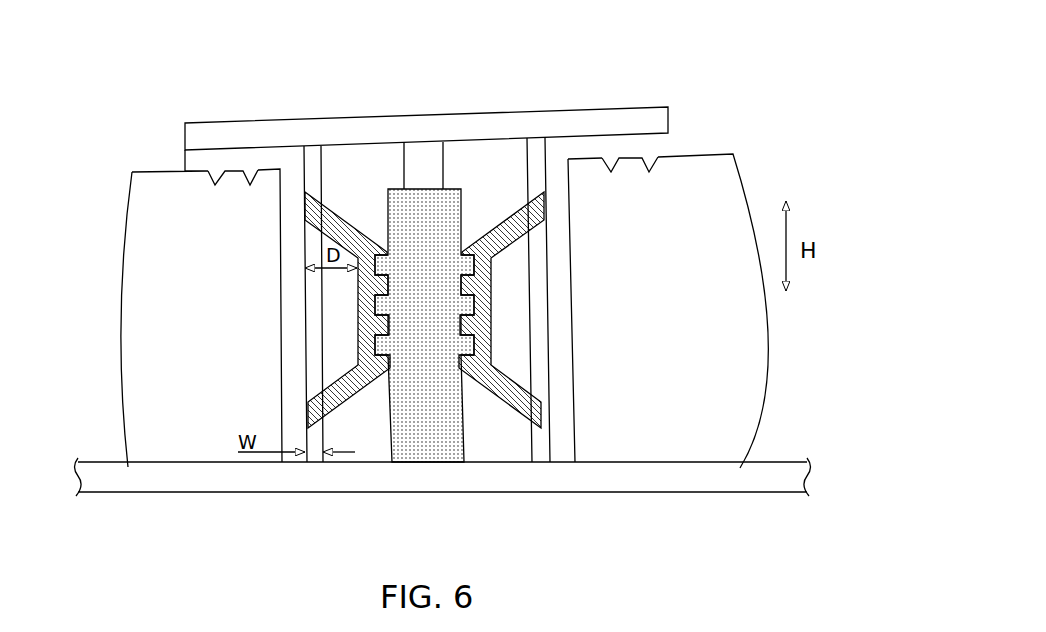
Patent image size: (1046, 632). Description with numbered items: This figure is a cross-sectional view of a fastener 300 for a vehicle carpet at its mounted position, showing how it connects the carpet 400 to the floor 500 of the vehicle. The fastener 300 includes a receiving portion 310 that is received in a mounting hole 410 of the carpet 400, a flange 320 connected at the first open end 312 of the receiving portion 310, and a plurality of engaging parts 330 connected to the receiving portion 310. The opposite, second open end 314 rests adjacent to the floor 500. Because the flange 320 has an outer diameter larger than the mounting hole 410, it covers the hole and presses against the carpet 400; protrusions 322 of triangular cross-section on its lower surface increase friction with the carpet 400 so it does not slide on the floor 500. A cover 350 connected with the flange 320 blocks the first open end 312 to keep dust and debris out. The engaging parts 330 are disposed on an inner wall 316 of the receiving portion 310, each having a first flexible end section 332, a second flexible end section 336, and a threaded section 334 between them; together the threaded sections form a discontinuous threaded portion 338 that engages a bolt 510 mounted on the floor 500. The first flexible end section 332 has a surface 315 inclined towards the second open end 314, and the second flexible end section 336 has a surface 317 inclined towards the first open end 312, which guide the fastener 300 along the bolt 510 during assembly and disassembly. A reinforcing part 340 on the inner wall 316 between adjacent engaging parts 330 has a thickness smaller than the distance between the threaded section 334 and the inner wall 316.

The fastener 300 is at (660, 60).
The receiving portion 310 is at (278, 291).
The first open end 312 is at (462, 140).
The second open end 314 is at (298, 465).
The surface 315 is at (332, 204).
The inner wall 316 is at (305, 362).
The surface 317 is at (387, 393).
The flange 320 is at (196, 158).
The protrusions 322 is at (212, 181).
The engaging parts 330 is at (355, 297).
The first flexible end section 332 is at (355, 237).
The threaded section 334 is at (460, 323).
The second flexible end section 336 is at (341, 397).
The discontinuous threaded portion 338 is at (458, 398).
The reinforcing part 340 is at (313, 152).
The cover 350 is at (427, 118).
The carpet 400 is at (702, 153).
The mounting hole 410 is at (562, 238).
The floor 500 is at (773, 463).
The bolt 510 is at (420, 458).